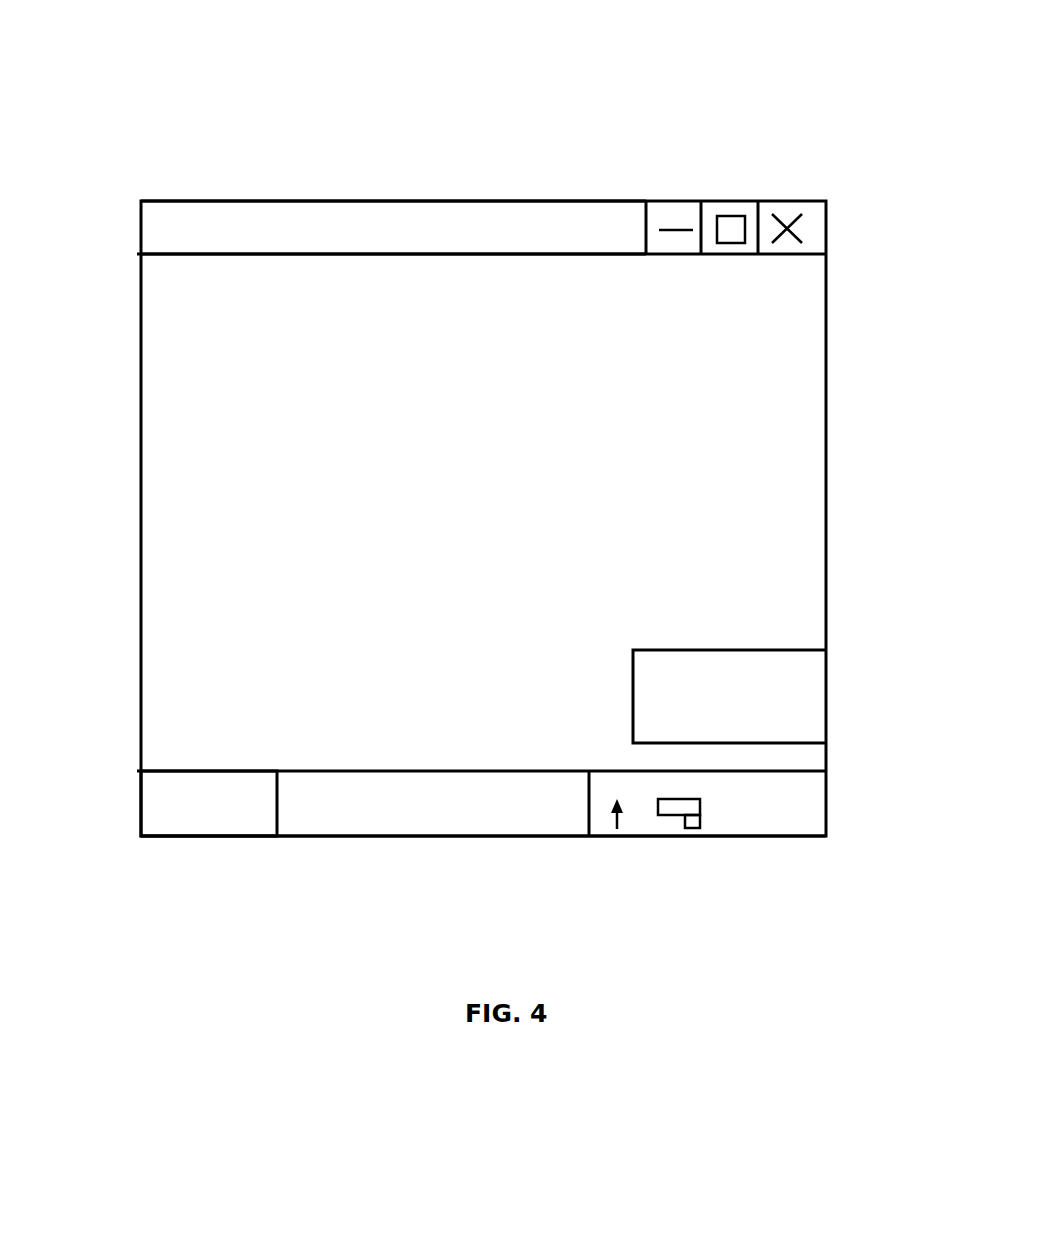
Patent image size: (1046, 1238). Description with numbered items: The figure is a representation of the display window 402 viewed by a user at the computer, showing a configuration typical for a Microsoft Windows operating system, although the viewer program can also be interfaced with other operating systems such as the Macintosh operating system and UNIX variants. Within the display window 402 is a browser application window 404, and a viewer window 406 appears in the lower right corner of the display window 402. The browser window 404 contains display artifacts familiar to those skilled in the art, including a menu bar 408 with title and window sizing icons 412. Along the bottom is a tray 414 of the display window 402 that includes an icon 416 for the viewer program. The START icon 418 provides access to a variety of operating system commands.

The display window 402 is at (177, 84).
The browser application window 404 is at (827, 382).
The viewer window 406 is at (777, 650).
The menu bar 408 is at (267, 255).
The window sizing icons 412 is at (716, 297).
The tray 414 is at (460, 770).
The icon 416 is at (670, 818).
The START icon 418 is at (278, 808).